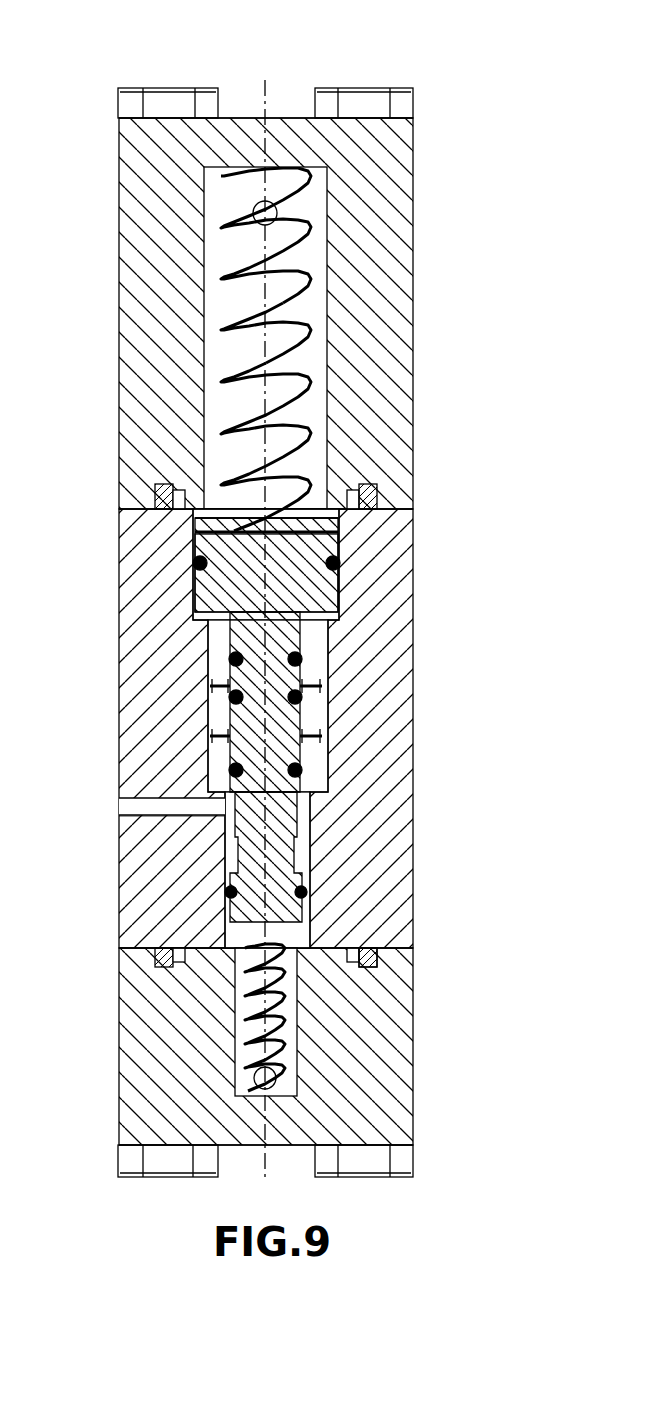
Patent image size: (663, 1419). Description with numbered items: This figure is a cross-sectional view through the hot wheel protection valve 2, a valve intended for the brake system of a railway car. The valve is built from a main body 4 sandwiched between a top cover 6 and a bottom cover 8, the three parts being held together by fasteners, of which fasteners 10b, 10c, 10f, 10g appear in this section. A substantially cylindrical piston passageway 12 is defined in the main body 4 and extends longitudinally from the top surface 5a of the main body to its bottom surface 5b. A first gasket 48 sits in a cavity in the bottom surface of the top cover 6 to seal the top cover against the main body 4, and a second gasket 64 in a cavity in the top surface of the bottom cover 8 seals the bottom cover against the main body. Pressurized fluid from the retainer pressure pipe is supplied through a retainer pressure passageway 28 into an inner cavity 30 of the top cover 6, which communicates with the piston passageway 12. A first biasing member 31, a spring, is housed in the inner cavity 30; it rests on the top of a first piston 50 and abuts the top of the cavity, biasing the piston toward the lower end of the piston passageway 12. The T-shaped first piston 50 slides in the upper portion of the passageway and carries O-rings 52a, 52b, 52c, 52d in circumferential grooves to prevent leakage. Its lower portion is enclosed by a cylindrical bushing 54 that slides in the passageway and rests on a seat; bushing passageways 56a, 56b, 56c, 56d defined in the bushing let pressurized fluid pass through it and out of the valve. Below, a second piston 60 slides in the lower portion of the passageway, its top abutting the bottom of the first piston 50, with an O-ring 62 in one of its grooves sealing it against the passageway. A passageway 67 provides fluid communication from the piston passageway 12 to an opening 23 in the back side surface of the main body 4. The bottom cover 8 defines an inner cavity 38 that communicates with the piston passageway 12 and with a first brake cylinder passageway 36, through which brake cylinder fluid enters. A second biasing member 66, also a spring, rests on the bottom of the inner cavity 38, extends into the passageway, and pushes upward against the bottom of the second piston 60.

The hot wheel protection valve 2 is at (466, 256).
The main body 4 is at (122, 548).
The top surface of main body 5a is at (130, 492).
The bottom surface of main body 5b is at (128, 946).
The top cover 6 is at (122, 150).
The bottom cover 8 is at (125, 1085).
The fastener 10b is at (165, 92).
The fastener 10c is at (365, 92).
The fastener 10f is at (125, 1160).
The fastener 10g is at (395, 1160).
The piston passageway 12 is at (325, 518).
The opening 23 is at (119, 805).
The retainer pressure passageway 28 is at (276, 210).
The inner cavity of top cover 30 is at (297, 402).
The first biasing member 31 is at (297, 333).
The first brake cylinder passageway 36 is at (276, 1080).
The inner cavity of bottom cover 38 is at (240, 980).
The first gasket 48 is at (330, 514).
The first piston 50 is at (330, 545).
The O-ring 52a is at (338, 560).
The O-ring 52b is at (300, 658).
The O-ring 52c is at (300, 697).
The O-ring 52d is at (300, 770).
The bushing 54 is at (338, 605).
The bushing passageway 56a is at (222, 680).
The bushing passageway 56b is at (222, 734).
The bushing passageway 56c is at (307, 686).
The bushing passageway 56d is at (320, 738).
The second piston 60 is at (280, 870).
The O-ring 62 is at (305, 893).
The second gasket 64 is at (368, 960).
The second biasing member 66 is at (287, 1000).
The passageway 67 is at (160, 812).